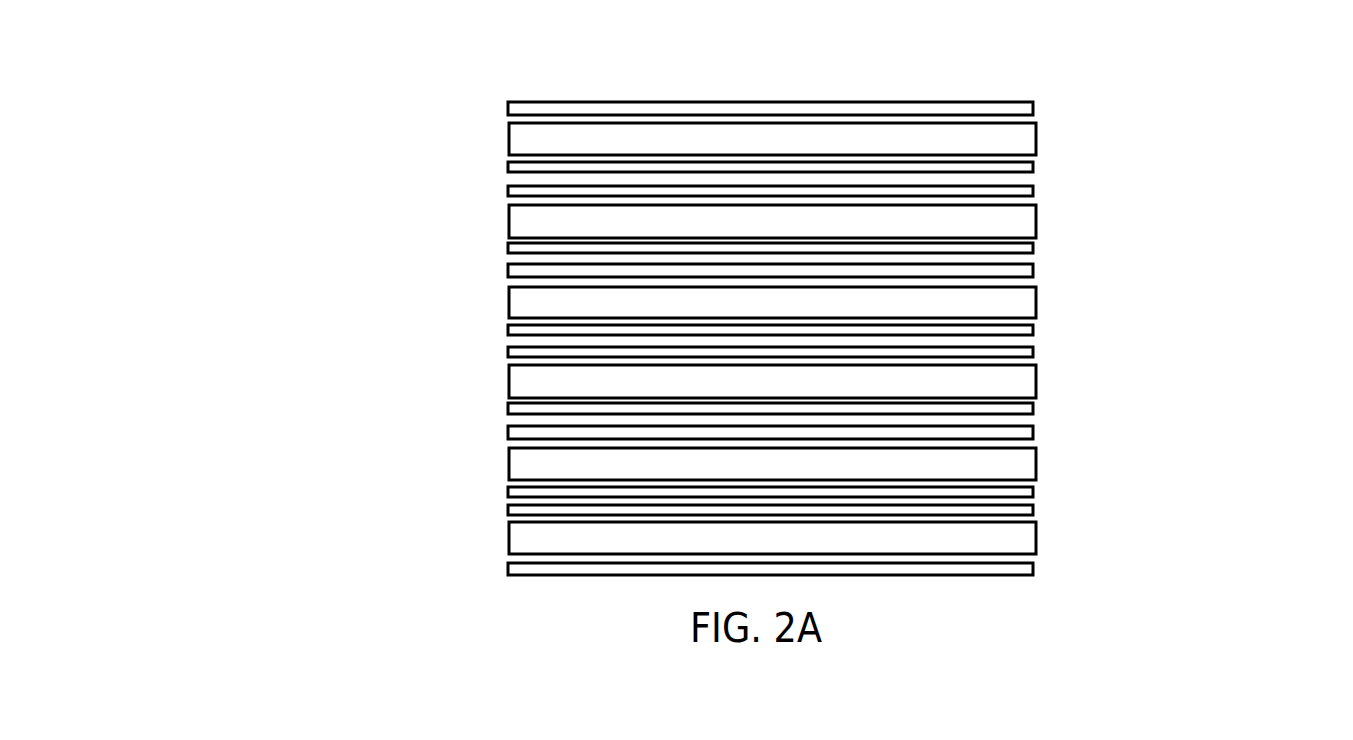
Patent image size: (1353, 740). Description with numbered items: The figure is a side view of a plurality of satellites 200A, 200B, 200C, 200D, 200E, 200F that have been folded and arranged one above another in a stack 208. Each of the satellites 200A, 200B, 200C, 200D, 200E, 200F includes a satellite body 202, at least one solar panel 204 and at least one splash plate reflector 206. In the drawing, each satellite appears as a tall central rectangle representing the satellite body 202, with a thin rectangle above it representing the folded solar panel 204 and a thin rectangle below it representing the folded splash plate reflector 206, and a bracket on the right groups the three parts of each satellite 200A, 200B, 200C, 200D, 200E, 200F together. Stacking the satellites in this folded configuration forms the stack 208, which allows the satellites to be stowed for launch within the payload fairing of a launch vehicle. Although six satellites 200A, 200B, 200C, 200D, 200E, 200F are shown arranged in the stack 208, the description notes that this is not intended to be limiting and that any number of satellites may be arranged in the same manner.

The stack 208 is at (717, 311).
The satellite 200A is at (1044, 103).
The satellite 200B is at (1044, 187).
The satellite 200C is at (717, 310).
The satellite 200D is at (1044, 347).
The satellite 200E is at (1044, 426).
The satellite 200F is at (1044, 503).
The solar panel 204 is at (510, 272).
The satellite body 202 is at (510, 309).
The splash plate reflector 206 is at (609, 364).